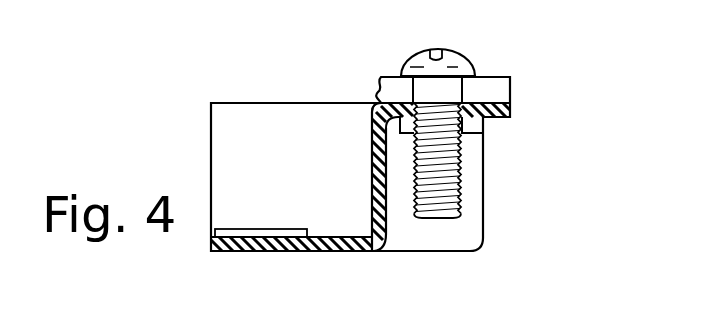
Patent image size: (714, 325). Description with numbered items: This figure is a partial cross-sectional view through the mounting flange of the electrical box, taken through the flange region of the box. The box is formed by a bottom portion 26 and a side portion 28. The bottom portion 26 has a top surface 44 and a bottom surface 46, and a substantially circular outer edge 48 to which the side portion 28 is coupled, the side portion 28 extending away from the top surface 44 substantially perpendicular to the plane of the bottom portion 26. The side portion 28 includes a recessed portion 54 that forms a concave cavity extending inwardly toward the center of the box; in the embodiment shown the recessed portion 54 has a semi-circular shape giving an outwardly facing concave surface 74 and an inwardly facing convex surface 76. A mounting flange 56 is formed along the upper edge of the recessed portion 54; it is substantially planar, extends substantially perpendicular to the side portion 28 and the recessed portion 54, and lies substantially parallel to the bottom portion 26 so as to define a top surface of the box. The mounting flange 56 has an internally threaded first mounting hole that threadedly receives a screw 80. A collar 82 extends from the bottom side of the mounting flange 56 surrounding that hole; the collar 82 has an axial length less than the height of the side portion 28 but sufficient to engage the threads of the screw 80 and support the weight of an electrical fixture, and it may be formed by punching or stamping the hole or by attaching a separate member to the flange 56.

The bottom portion 26 is at (358, 252).
The side portion 28 is at (226, 122).
The top surface 44 is at (371, 238).
The bottom surface 46 is at (318, 252).
The outer edge 48 is at (334, 234).
The recessed portion 54 is at (486, 213).
The mounting flange 56 is at (493, 122).
The outwardly facing concave surface 74 is at (386, 224).
The inwardly facing convex surface 76 is at (370, 127).
The screw 80 is at (452, 56).
The collar 82 is at (484, 132).